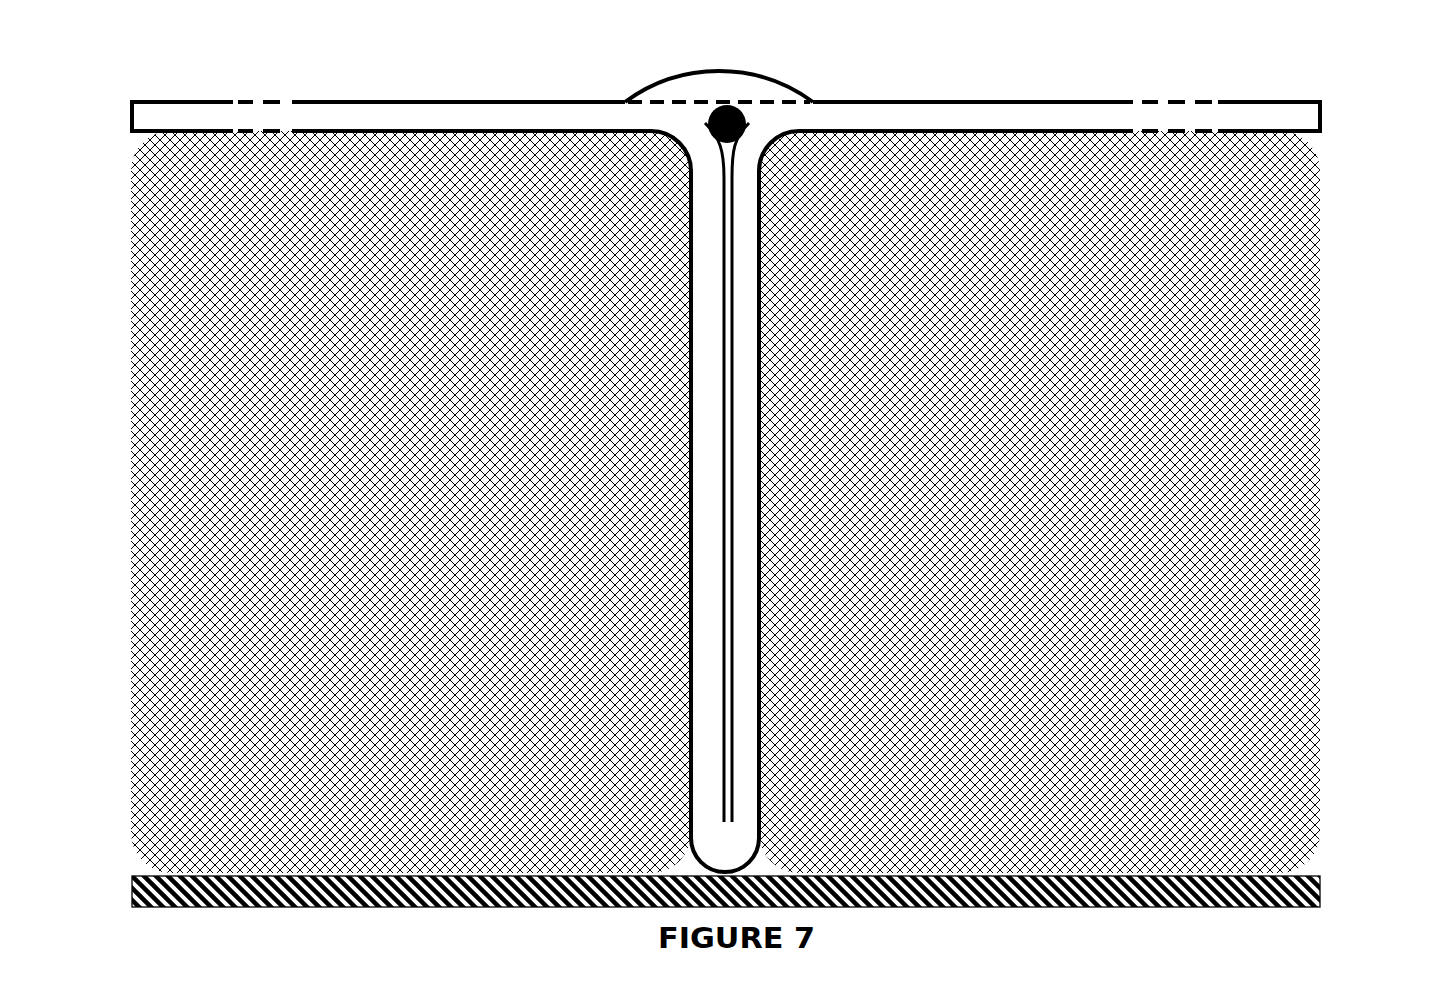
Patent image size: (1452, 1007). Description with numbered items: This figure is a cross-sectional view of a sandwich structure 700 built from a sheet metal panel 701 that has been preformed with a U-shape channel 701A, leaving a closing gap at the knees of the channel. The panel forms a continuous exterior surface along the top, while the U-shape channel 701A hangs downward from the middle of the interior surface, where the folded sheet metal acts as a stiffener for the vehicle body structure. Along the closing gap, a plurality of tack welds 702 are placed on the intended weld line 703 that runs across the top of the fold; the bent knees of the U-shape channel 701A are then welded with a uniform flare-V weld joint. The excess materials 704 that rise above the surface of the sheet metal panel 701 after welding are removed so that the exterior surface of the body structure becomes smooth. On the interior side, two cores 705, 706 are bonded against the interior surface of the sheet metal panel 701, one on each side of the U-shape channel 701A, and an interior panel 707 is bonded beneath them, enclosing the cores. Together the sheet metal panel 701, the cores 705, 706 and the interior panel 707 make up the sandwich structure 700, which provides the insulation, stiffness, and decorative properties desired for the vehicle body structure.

The sandwich structure 700 is at (1102, 78).
The sheet metal panel 701 is at (493, 115).
The U-shape channel 701A is at (705, 418).
The tack welds 702 is at (688, 138).
The intended weld line 703 is at (715, 90).
The excess materials 704 is at (750, 73).
The core 705 is at (182, 517).
The core 706 is at (1285, 492).
The interior panel 707 is at (1300, 892).